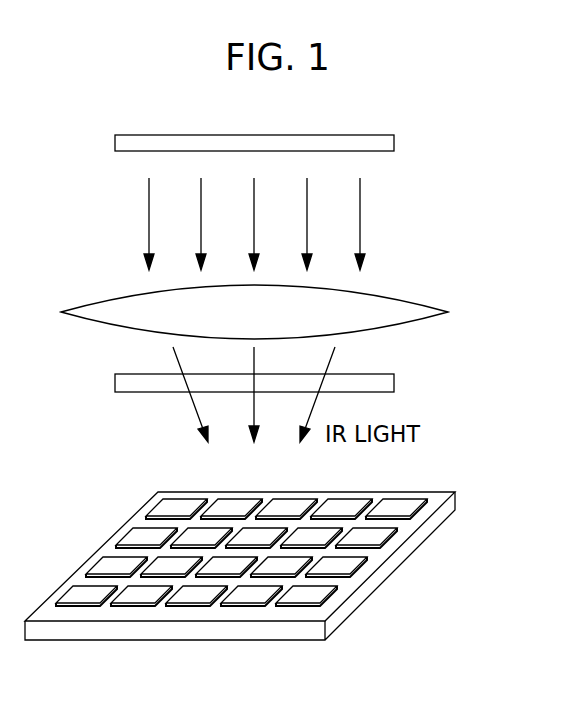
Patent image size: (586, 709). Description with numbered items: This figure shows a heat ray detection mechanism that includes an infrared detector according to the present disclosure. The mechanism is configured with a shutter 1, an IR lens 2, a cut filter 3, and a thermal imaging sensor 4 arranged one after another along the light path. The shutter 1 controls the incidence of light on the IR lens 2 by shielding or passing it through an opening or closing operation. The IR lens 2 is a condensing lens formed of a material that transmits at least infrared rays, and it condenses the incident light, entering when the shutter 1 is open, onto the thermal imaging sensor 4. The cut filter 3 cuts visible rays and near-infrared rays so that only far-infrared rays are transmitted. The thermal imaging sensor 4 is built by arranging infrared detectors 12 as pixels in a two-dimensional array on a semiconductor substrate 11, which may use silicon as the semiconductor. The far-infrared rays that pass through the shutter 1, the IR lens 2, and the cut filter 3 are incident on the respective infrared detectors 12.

The shutter 1 is at (394, 143).
The IR lens 2 is at (412, 300).
The cut filter 3 is at (394, 383).
The thermal imaging sensor 4 is at (287, 532).
The semiconductor substrate 11 is at (377, 580).
The infrared detector 12 is at (145, 538).